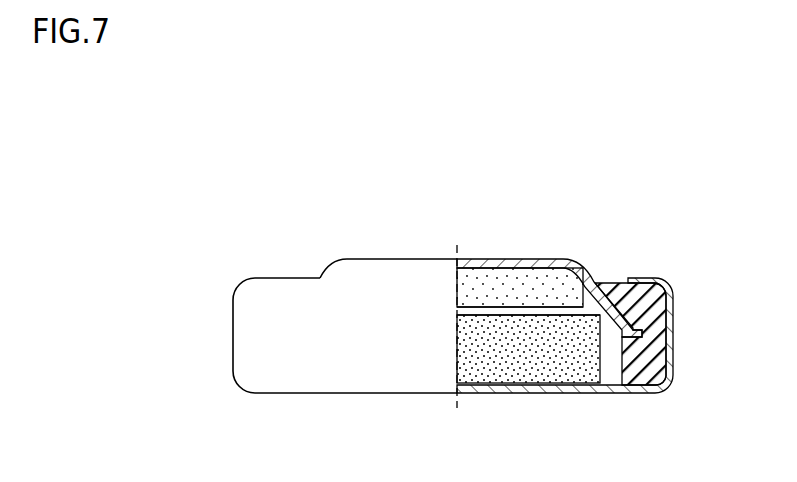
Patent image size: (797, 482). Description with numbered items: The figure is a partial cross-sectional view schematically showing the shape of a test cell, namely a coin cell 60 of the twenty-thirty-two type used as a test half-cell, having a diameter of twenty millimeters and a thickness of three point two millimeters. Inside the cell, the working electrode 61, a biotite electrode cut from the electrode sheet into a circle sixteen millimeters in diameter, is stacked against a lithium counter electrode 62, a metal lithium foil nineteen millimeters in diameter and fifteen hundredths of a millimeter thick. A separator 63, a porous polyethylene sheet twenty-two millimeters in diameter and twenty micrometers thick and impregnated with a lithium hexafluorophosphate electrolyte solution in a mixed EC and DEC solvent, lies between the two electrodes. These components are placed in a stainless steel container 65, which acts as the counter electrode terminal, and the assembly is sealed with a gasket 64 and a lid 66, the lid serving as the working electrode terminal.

The coin cell 60 is at (668, 226).
The working electrode 61 is at (513, 268).
The lithium counter electrode 62 is at (543, 377).
The separator 63 is at (547, 312).
The gasket 64 is at (660, 313).
The stainless steel container 65 is at (378, 375).
The lid 66 is at (394, 258).